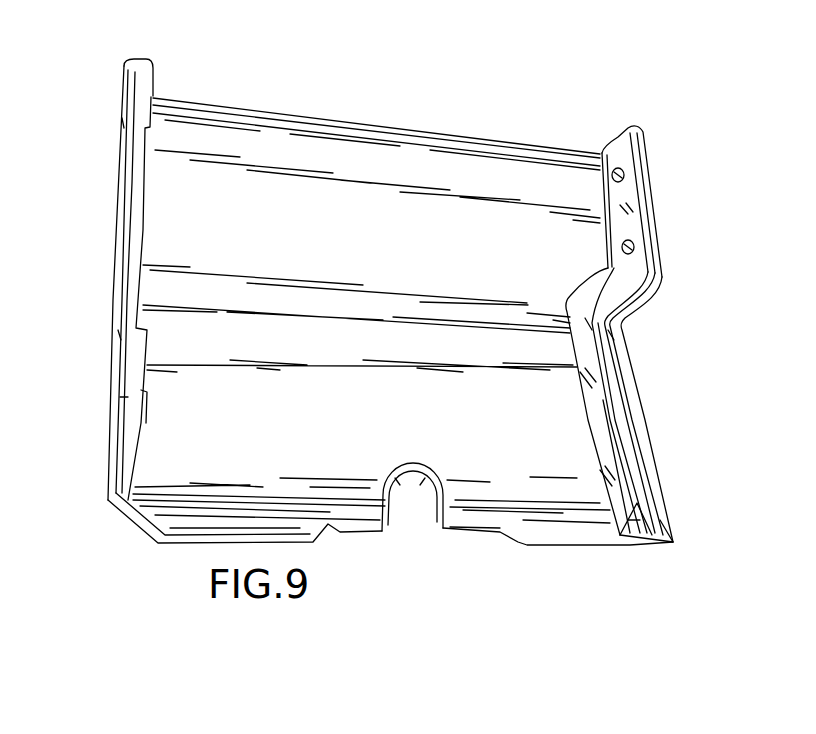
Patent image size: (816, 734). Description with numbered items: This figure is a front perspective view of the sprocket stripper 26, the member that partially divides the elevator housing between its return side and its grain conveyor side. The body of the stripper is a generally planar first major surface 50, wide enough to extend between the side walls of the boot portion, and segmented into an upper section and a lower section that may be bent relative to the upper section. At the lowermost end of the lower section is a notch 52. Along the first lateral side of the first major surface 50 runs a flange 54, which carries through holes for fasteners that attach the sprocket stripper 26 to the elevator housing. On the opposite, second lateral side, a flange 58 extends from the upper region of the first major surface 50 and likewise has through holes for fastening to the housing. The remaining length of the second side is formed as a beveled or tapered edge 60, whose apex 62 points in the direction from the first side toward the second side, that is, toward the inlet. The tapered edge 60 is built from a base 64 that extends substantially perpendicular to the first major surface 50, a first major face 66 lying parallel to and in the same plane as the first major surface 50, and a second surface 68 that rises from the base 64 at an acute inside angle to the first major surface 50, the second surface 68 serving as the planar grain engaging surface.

The sprocket stripper 26 is at (506, 52).
The first major surface 50 is at (340, 160).
The notch 52 is at (438, 498).
The flange 54 is at (153, 72).
The flange 58 is at (640, 175).
The tapered edge 60 is at (650, 480).
The apex 62 is at (652, 440).
The base 64 is at (612, 458).
The first major face 66 is at (647, 547).
The second surface 68 is at (620, 347).